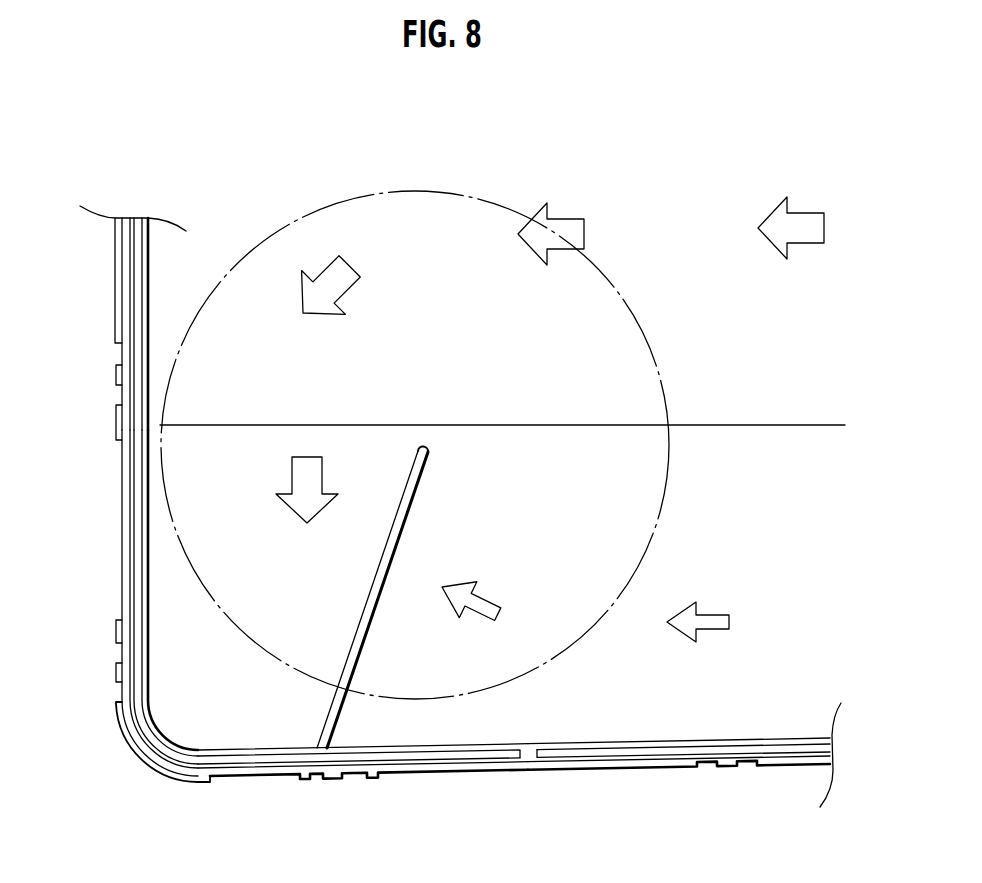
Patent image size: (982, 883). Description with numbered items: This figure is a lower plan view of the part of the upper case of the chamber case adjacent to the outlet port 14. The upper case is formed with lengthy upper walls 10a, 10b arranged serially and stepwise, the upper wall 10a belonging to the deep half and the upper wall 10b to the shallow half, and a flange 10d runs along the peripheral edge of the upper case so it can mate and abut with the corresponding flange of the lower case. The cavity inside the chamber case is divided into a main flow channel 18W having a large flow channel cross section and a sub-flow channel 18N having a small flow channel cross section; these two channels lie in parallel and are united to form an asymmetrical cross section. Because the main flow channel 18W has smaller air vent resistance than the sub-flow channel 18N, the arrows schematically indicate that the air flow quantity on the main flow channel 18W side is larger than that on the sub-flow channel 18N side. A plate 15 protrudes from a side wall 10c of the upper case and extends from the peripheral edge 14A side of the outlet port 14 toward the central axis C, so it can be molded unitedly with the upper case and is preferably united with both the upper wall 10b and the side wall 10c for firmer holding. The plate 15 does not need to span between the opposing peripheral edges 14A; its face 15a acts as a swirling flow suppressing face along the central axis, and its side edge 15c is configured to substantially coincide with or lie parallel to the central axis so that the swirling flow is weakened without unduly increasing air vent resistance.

The upper wall 10a is at (164, 277).
The upper wall 10b is at (170, 607).
The side wall 10c is at (364, 750).
The flange 10d is at (529, 768).
The outlet port 14 is at (670, 449).
The peripheral edge 14A is at (402, 189).
The plate 15 is at (384, 552).
The face 15a is at (374, 576).
The side edge 15c is at (423, 449).
The main flow channel 18W is at (725, 313).
The sub-flow channel 18N is at (725, 560).